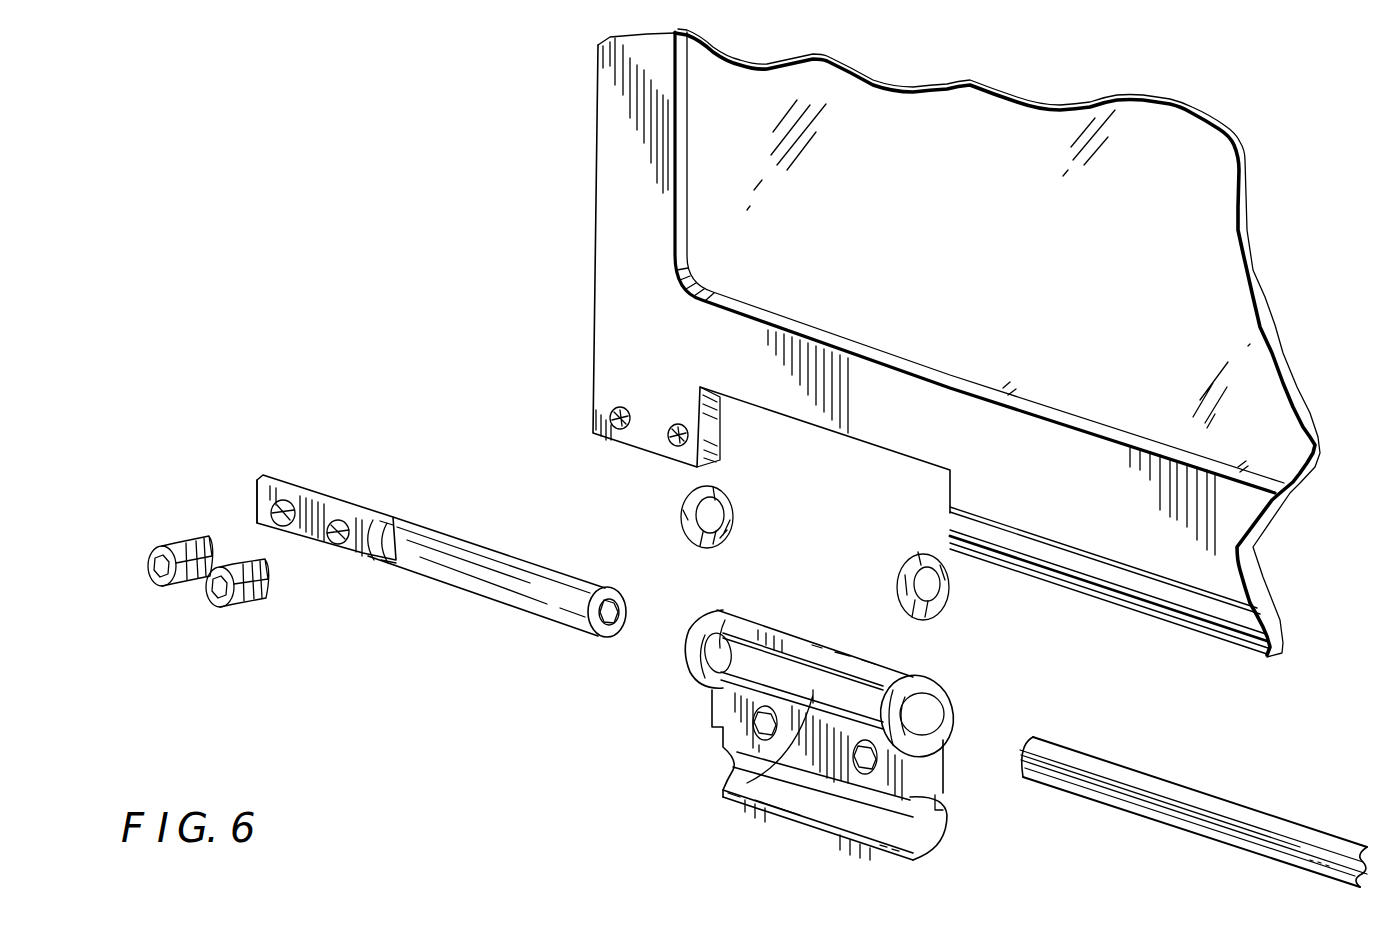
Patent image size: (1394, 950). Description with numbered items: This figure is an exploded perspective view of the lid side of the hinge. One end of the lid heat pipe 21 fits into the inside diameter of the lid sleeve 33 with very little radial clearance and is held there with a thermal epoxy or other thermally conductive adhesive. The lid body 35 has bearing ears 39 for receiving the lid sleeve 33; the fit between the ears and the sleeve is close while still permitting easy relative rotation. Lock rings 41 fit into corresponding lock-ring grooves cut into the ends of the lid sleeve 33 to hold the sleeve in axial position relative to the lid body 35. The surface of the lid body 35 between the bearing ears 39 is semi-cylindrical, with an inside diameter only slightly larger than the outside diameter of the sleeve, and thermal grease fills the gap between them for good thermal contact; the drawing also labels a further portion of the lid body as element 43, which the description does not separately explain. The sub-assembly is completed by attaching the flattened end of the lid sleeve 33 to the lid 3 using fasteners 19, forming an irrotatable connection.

The lid 3 is at (618, 220).
The fasteners 19 is at (237, 560).
The lid heat pipe 21 is at (1120, 790).
The lid sleeve 33 is at (537, 593).
The lid body 35 is at (712, 722).
The bearing ears 39 is at (893, 686).
The lock rings 41 is at (900, 563).
The lower channel 43 is at (723, 792).